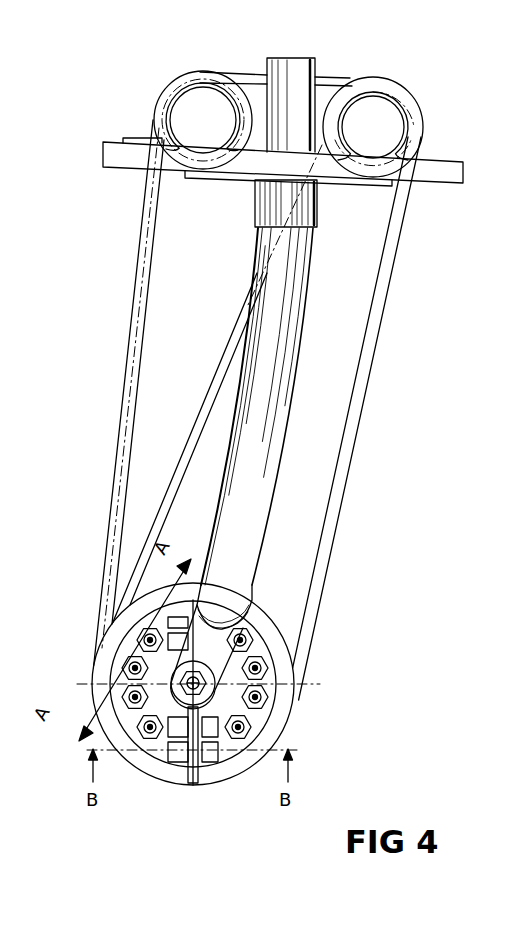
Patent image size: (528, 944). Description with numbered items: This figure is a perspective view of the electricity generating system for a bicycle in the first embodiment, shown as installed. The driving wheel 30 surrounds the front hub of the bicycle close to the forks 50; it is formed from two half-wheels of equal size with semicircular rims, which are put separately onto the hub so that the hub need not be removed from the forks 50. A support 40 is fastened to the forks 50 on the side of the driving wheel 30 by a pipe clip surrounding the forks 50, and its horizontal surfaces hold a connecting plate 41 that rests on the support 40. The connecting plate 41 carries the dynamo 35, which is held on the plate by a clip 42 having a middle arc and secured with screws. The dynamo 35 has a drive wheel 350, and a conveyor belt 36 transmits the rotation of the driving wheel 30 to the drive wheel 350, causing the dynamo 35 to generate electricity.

The driving wheel 30 is at (198, 712).
The dynamo 35 is at (399, 124).
The drive wheel 350 is at (387, 109).
The conveyor belt 36 is at (364, 418).
The support 40 is at (310, 152).
The connecting plate 41 is at (293, 192).
The clip 42 is at (308, 151).
The forks 50 is at (262, 468).